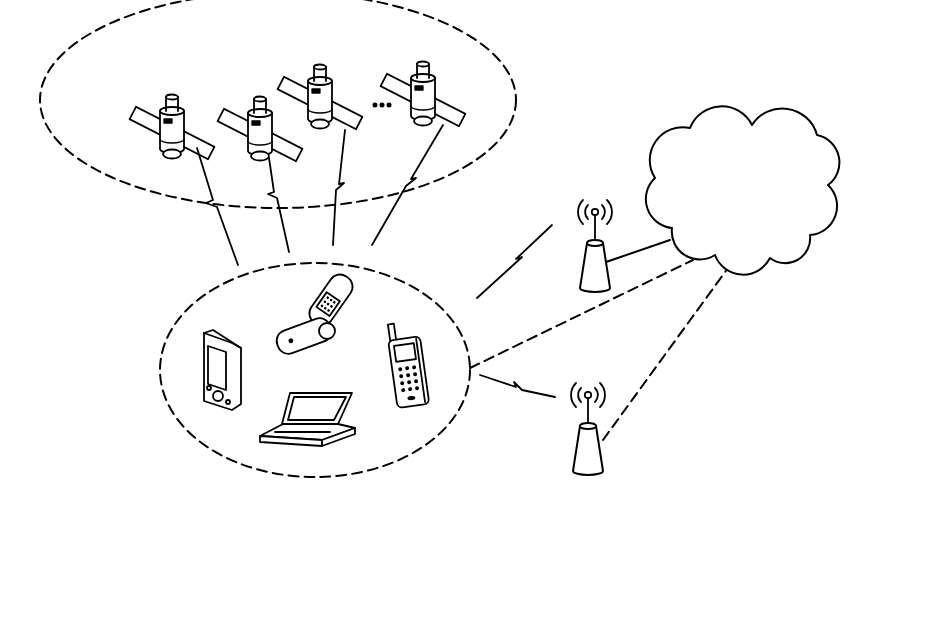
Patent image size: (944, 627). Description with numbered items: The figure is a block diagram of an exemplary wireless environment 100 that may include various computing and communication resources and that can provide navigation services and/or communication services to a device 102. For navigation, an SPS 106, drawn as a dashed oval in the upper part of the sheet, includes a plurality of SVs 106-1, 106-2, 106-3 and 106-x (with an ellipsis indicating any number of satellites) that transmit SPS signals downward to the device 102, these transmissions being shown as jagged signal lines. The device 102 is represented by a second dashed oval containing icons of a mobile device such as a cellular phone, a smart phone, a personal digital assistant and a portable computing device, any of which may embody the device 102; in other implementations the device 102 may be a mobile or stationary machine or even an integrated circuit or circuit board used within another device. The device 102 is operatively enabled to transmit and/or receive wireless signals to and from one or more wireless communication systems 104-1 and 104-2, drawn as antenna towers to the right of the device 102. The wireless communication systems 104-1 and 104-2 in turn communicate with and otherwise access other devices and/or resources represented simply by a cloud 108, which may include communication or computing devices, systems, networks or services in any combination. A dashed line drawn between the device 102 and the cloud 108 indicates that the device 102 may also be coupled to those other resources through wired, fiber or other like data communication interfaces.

The wireless environment 100 is at (655, 46).
The device 102 is at (410, 455).
The wireless communication system 104-1 is at (570, 197).
The wireless communication system 104-2 is at (603, 478).
The SPS 106 is at (145, 190).
The SV 106-1 is at (172, 106).
The SV 106-2 is at (242, 88).
The SV 106-3 is at (316, 78).
The SV 106-x is at (422, 70).
The cloud 108 is at (710, 108).